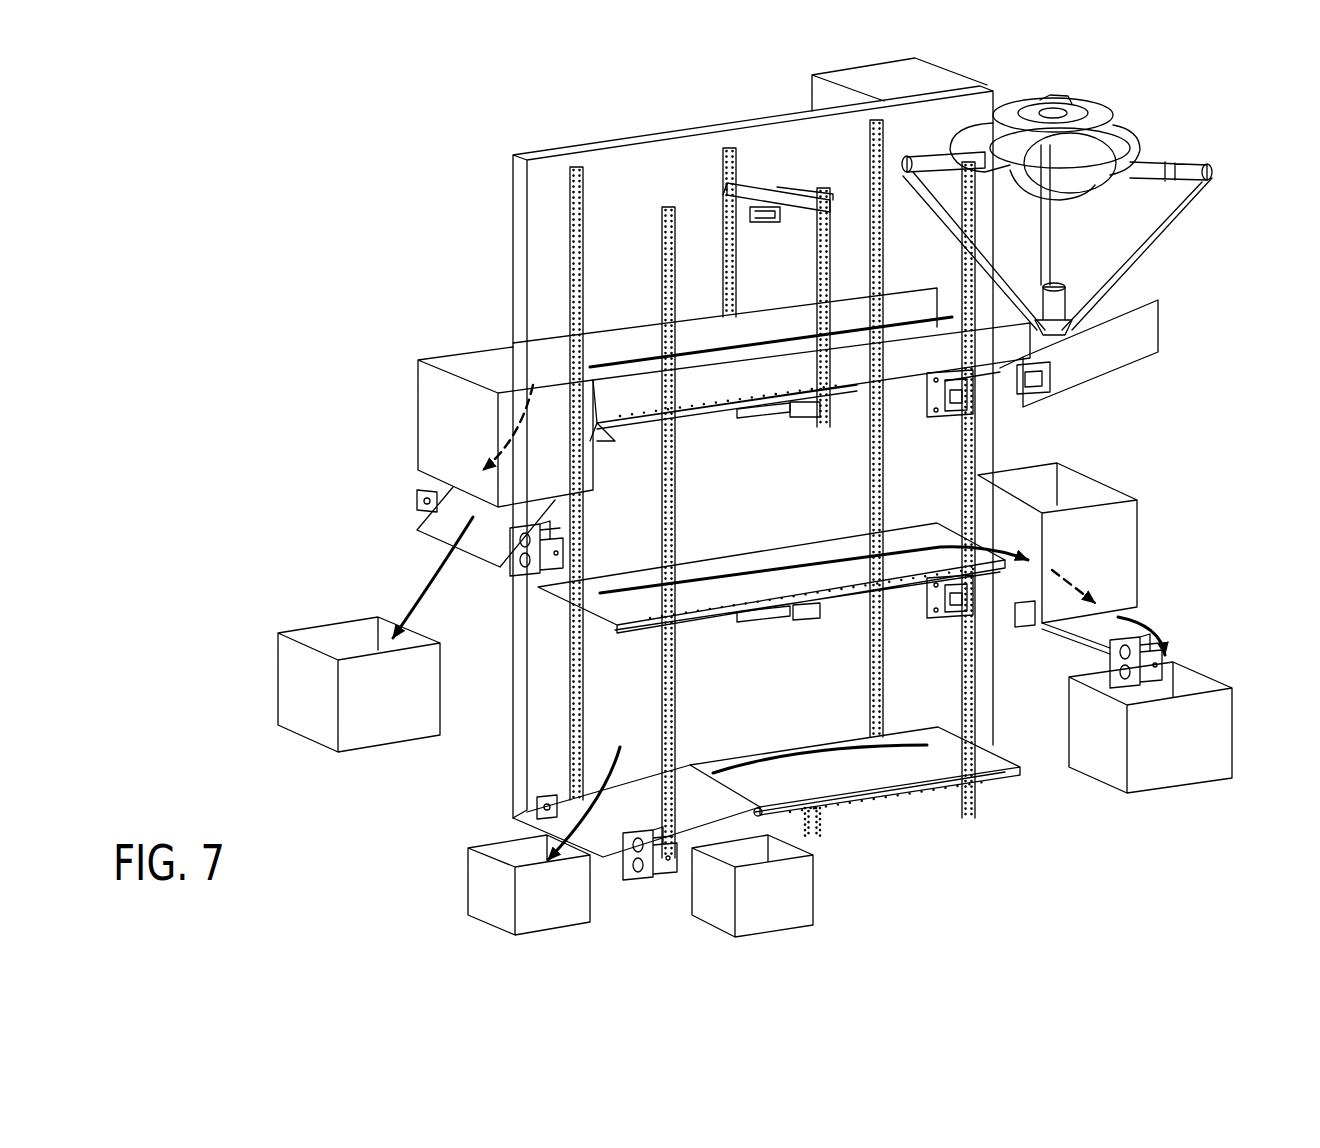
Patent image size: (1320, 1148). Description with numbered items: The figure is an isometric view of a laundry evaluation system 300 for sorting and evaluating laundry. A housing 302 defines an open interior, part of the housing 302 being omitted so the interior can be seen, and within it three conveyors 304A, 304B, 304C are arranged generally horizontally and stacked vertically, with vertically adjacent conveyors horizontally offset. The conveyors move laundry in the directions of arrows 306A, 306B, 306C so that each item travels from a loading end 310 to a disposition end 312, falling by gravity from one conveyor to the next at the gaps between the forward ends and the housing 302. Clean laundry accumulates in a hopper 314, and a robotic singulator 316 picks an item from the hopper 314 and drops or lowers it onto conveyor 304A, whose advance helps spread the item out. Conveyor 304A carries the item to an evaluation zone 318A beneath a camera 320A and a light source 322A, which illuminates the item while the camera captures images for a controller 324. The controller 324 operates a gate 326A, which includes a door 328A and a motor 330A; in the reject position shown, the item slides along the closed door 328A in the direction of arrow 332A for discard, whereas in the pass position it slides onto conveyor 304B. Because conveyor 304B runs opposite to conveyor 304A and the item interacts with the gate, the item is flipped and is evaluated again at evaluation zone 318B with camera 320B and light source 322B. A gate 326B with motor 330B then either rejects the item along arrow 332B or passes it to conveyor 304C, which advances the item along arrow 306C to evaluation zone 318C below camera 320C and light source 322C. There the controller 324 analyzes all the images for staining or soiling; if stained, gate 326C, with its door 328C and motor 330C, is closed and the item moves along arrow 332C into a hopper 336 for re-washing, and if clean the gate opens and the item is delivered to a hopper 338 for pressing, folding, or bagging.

The laundry evaluation system 300 is at (385, 230).
The housing 302 is at (548, 193).
The conveyor 304A is at (632, 378).
The conveyor 304B is at (830, 543).
The conveyor 304C is at (853, 747).
The arrow 306A is at (768, 365).
The arrow 306B is at (917, 550).
The arrow 306C is at (900, 750).
The loading end 310 is at (1058, 196).
The disposition end 312 is at (453, 808).
The hopper 314 is at (1150, 330).
The robotic singulator 316 is at (1137, 117).
The evaluation zone 318A is at (563, 375).
The evaluation zone 318B is at (730, 560).
The evaluation zone 318C is at (738, 758).
The camera 320A is at (743, 217).
The camera 320B is at (798, 412).
The camera 320C is at (770, 620).
The light source 322A is at (753, 197).
The light source 322B is at (758, 420).
The light source 322C is at (805, 620).
The controller 324 is at (830, 78).
The gate 326A is at (610, 464).
The gate 326B is at (1050, 634).
The gate 326C is at (740, 828).
The door 328A is at (433, 523).
The door 328C is at (568, 810).
The motor 330A is at (510, 565).
The motor 330B is at (1162, 673).
The motor 330C is at (645, 873).
The arrow 332A is at (433, 558).
The arrow 332B is at (1160, 619).
The arrow 332C is at (599, 783).
The hopper 336 is at (482, 873).
The hopper 338 is at (805, 900).